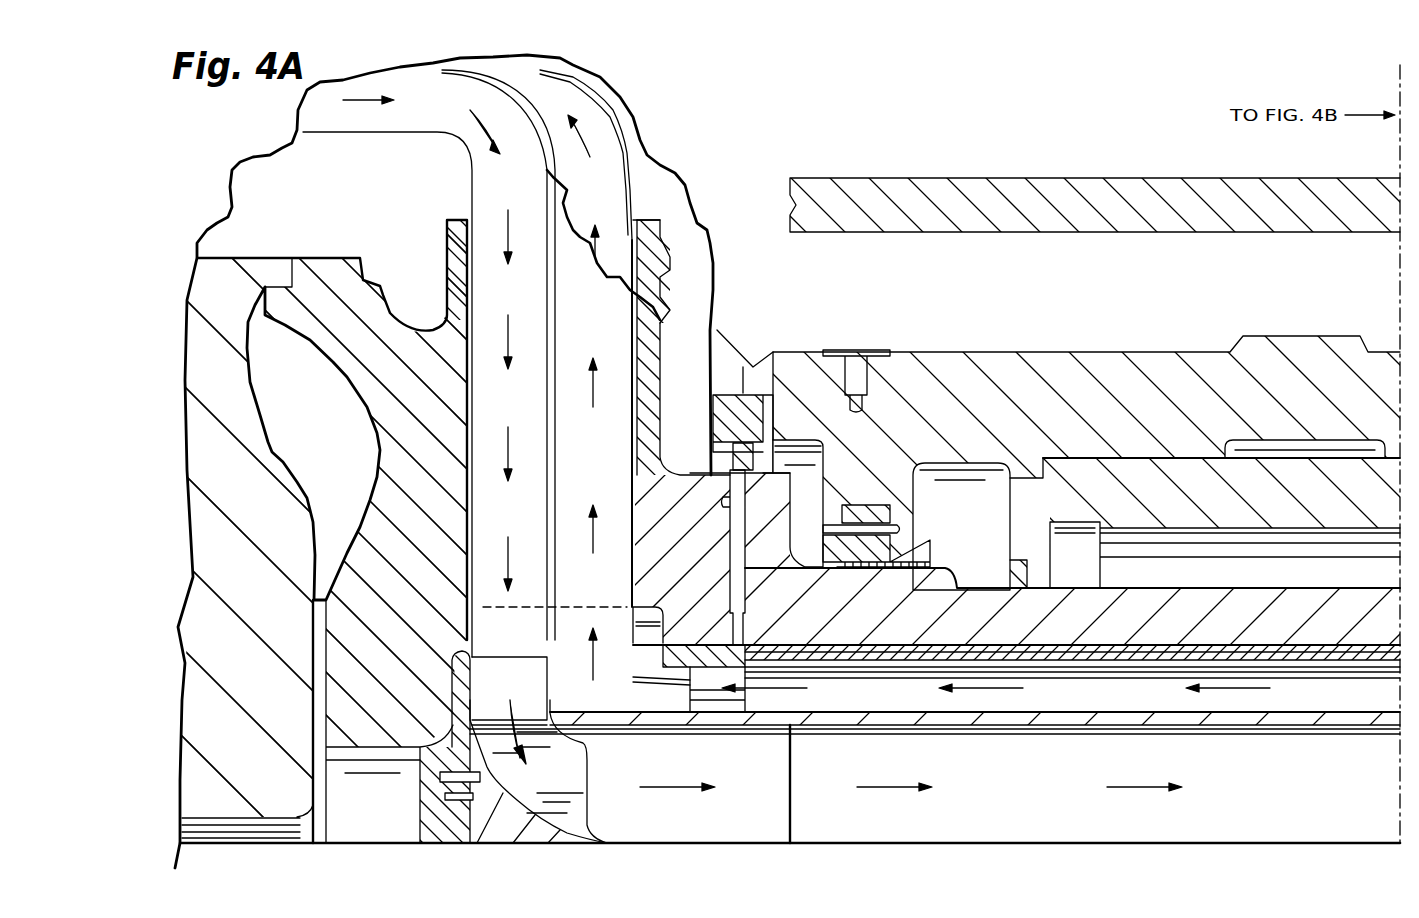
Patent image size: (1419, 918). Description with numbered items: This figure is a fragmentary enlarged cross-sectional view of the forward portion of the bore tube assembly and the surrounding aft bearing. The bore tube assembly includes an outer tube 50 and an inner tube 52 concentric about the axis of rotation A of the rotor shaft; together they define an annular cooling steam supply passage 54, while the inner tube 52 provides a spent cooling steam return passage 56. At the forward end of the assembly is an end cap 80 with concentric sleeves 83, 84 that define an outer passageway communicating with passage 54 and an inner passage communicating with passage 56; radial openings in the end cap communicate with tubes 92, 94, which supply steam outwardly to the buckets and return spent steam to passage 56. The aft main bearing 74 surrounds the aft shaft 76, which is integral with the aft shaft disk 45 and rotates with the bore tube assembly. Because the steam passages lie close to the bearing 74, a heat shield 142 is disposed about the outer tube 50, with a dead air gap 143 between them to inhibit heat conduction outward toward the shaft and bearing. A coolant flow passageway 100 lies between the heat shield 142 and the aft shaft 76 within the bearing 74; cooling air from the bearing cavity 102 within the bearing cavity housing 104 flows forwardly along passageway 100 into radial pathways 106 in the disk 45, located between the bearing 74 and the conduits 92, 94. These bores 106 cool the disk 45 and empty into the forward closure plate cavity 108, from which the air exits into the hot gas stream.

The aft shaft disk 45 is at (380, 522).
The outer tube 50 is at (1073, 660).
The inner tube 52 is at (1098, 715).
The annular cooling steam supply passage 54 is at (1217, 697).
The spent cooling steam return passage 56 is at (1028, 771).
The aft main bearing 74 is at (1215, 370).
The aft shaft 76 is at (1198, 605).
The end cap 80 is at (707, 660).
The sleeve 83 is at (647, 667).
The sleeve 84 is at (597, 708).
The tube 92 is at (653, 257).
The tube 94 is at (447, 313).
The coolant flow passageway 100 is at (947, 628).
The bearing cavity 102 is at (942, 284).
The bearing cavity housing 104 is at (1203, 178).
The radial pathways 106 is at (743, 586).
The forward closure plate cavity 108 is at (714, 312).
The heat shield 142 is at (1333, 645).
The dead air gap 143 is at (902, 660).
The axis of rotation A is at (900, 843).